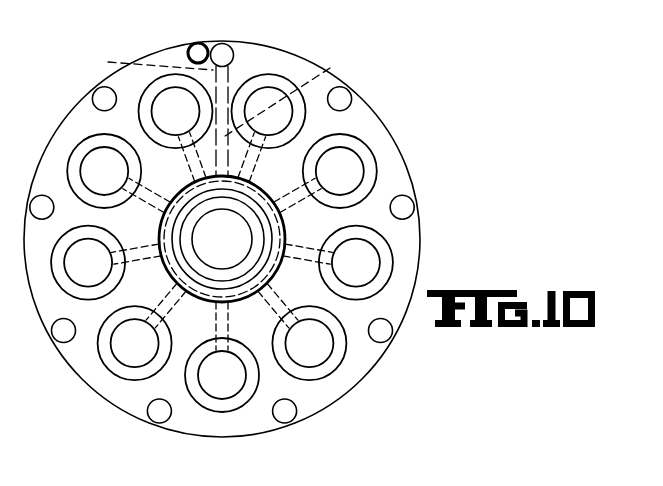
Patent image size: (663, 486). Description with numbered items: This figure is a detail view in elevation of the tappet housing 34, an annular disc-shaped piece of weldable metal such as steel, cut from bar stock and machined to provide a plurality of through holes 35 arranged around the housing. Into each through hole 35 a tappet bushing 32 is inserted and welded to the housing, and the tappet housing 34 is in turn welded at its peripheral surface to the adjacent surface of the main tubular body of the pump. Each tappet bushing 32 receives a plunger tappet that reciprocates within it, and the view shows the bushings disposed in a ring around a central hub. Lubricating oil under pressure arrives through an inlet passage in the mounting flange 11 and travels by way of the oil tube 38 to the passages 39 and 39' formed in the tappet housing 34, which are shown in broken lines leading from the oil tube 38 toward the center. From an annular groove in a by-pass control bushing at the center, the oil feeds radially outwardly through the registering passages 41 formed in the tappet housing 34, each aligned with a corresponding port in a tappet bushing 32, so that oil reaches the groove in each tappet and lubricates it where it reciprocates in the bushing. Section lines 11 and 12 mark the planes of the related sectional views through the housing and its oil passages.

The mounting flange 11 is at (208, 22).
The section line 12 is at (173, 13).
The tappet bushing 32 is at (382, 250).
The tappet housing 34 is at (373, 138).
The through hole 35 is at (380, 170).
The oil tube 38 is at (187, 49).
The passage 39 is at (147, 62).
The passage 39' is at (297, 96).
The passage 41 is at (232, 325).